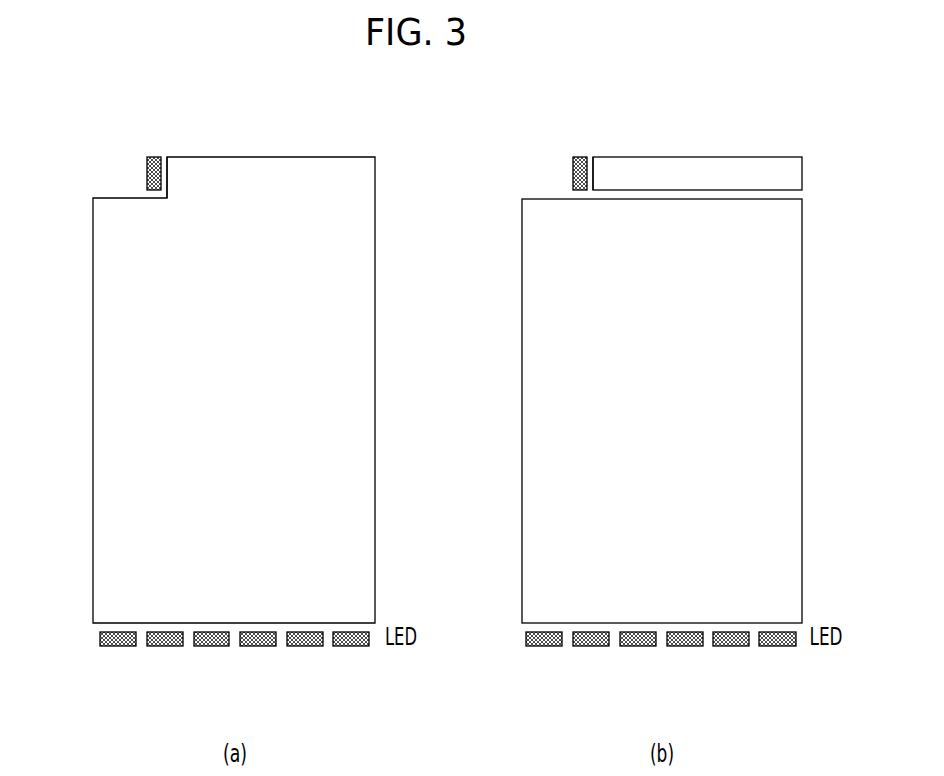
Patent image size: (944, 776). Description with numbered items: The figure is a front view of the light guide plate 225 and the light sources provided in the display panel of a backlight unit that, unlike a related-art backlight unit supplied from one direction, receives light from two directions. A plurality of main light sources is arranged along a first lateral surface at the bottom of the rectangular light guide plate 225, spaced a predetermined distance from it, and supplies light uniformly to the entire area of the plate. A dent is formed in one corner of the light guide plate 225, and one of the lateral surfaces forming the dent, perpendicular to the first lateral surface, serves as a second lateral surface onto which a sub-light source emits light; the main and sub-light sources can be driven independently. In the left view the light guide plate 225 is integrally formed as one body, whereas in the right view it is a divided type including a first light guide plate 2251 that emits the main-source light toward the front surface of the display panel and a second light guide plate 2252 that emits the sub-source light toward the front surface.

The light guide plate 225 is at (108, 287).
The first light guide plate 2251 is at (789, 283).
The second light guide plate 2252 is at (790, 175).